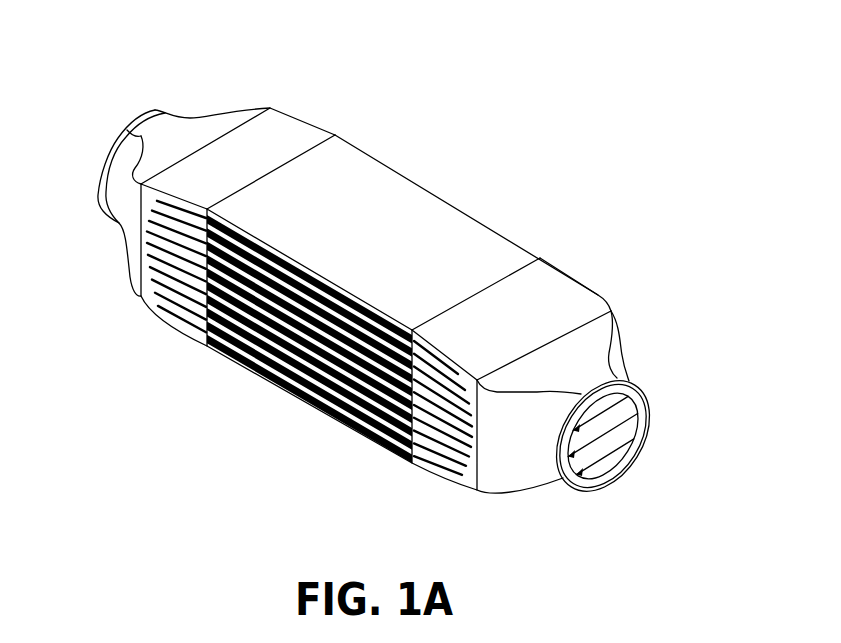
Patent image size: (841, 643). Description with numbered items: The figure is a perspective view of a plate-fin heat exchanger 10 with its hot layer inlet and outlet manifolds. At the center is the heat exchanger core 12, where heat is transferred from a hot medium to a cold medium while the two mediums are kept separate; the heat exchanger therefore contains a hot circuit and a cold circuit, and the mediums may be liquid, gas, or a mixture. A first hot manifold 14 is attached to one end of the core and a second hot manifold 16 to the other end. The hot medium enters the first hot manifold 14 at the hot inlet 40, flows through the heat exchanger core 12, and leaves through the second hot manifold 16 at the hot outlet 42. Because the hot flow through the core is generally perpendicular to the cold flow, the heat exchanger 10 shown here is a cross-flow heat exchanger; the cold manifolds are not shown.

The heat exchanger 10 is at (448, 98).
The heat exchanger core 12 is at (483, 230).
The first hot manifold 14 is at (578, 297).
The second hot manifold 16 is at (297, 127).
The hot inlet 40 is at (647, 468).
The hot outlet 42 is at (100, 140).